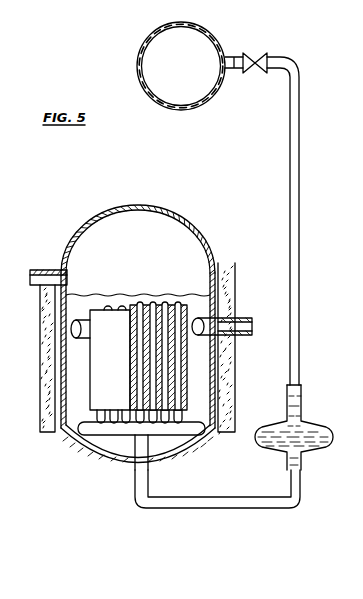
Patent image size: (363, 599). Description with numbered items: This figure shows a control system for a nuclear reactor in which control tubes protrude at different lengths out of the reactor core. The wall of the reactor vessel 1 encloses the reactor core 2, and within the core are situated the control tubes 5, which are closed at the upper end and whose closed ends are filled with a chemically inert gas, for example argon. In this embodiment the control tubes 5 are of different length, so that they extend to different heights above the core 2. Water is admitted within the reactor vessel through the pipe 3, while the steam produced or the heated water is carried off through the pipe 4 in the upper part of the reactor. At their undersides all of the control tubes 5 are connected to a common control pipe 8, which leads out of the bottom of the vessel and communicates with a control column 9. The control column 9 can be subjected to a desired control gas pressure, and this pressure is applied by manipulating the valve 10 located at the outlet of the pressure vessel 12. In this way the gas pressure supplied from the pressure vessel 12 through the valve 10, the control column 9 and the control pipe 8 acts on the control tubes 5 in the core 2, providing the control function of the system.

The wall of the reactor vessel 1 is at (102, 218).
The reactor core 2 is at (98, 313).
The pipe 3 is at (253, 327).
The pipe 4 is at (44, 270).
The control tubes 5 is at (137, 307).
The common control pipe 8 is at (277, 509).
The control column 9 is at (305, 425).
The valve 10 is at (255, 62).
The pressure vessel 12 is at (157, 47).